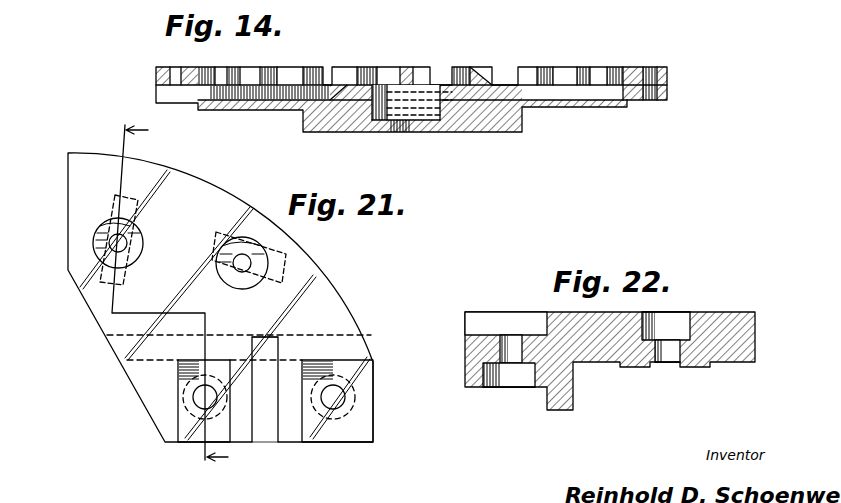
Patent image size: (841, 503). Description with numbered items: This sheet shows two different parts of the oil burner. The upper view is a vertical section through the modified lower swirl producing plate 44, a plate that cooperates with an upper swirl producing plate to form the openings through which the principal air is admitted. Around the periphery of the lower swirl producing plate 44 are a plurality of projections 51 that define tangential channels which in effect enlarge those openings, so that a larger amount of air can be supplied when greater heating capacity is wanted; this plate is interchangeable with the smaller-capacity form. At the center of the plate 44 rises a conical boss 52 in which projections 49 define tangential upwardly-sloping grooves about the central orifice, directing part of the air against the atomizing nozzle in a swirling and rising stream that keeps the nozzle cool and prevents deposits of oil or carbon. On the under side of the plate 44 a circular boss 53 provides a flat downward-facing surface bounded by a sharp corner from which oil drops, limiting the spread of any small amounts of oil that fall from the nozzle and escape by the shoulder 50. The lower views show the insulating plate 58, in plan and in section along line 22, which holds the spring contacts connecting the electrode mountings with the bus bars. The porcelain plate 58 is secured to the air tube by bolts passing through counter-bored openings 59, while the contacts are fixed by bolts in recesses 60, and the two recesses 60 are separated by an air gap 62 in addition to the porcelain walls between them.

In FIG. 14, the lower swirl producing plate 44 is at (620, 107).
In FIG. 14, the projections 49 is at (460, 67).
In FIG. 14, the shoulder 50 is at (398, 132).
In FIG. 14, the projections 51 is at (633, 66).
In FIG. 14, the conical boss 52 is at (366, 85).
In FIG. 14, the circular boss 53 is at (475, 132).
In FIG. 21, the insulating plate 58 is at (337, 303).
In FIG. 22, the insulating plate 58 is at (720, 322).
In FIG. 21, the counter-bored openings 59 is at (221, 252).
In FIG. 22, the counter-bored openings 59 is at (672, 337).
In FIG. 21, the recesses 60 is at (185, 443).
In FIG. 22, the recesses 60 is at (504, 322).
In FIG. 21, the air gap 62 is at (268, 441).
In FIG. 21, the section line 22— 22 is at (168, 295).